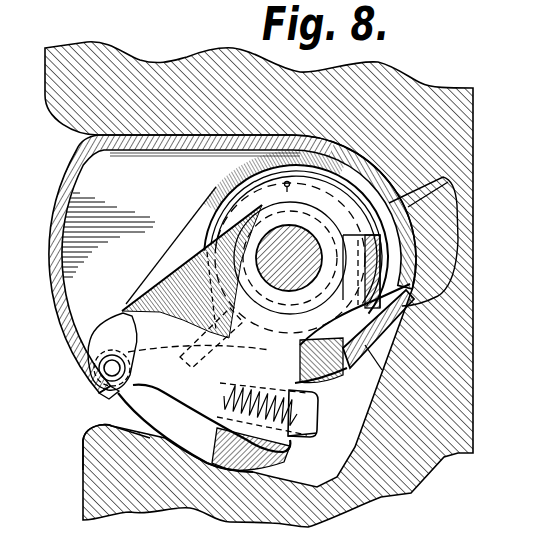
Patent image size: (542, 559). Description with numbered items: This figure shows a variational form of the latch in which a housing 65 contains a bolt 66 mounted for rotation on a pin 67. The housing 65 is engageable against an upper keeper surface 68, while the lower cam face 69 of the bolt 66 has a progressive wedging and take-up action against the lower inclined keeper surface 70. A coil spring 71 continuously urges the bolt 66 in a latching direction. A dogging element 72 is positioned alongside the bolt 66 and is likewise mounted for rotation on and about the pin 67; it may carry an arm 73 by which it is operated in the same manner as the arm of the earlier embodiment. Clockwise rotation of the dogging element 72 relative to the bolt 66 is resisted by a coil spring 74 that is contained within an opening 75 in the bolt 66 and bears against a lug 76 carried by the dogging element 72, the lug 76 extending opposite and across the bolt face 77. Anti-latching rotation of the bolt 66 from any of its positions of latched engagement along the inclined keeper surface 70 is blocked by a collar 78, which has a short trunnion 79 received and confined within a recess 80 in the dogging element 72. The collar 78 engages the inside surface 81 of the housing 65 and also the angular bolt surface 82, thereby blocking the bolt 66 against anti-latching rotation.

The housing 65 is at (58, 195).
The bolt 66 is at (170, 256).
The pin 67 is at (291, 284).
The upper keeper surface 68 is at (186, 133).
The lower cam face 69 is at (88, 452).
The lower inclined keeper surface 70 is at (268, 471).
The coil spring 71 is at (317, 188).
The dogging element 72 is at (196, 286).
The arm 73 is at (458, 237).
The coil spring 74 is at (212, 420).
The opening 75 is at (222, 400).
The lug 76 is at (319, 406).
The bolt face 77 is at (319, 433).
The collar 78 is at (94, 395).
The trunnion 79 is at (97, 370).
The recess 80 is at (122, 365).
The inside surface 81 is at (62, 296).
The angular bolt surface 82 is at (122, 313).